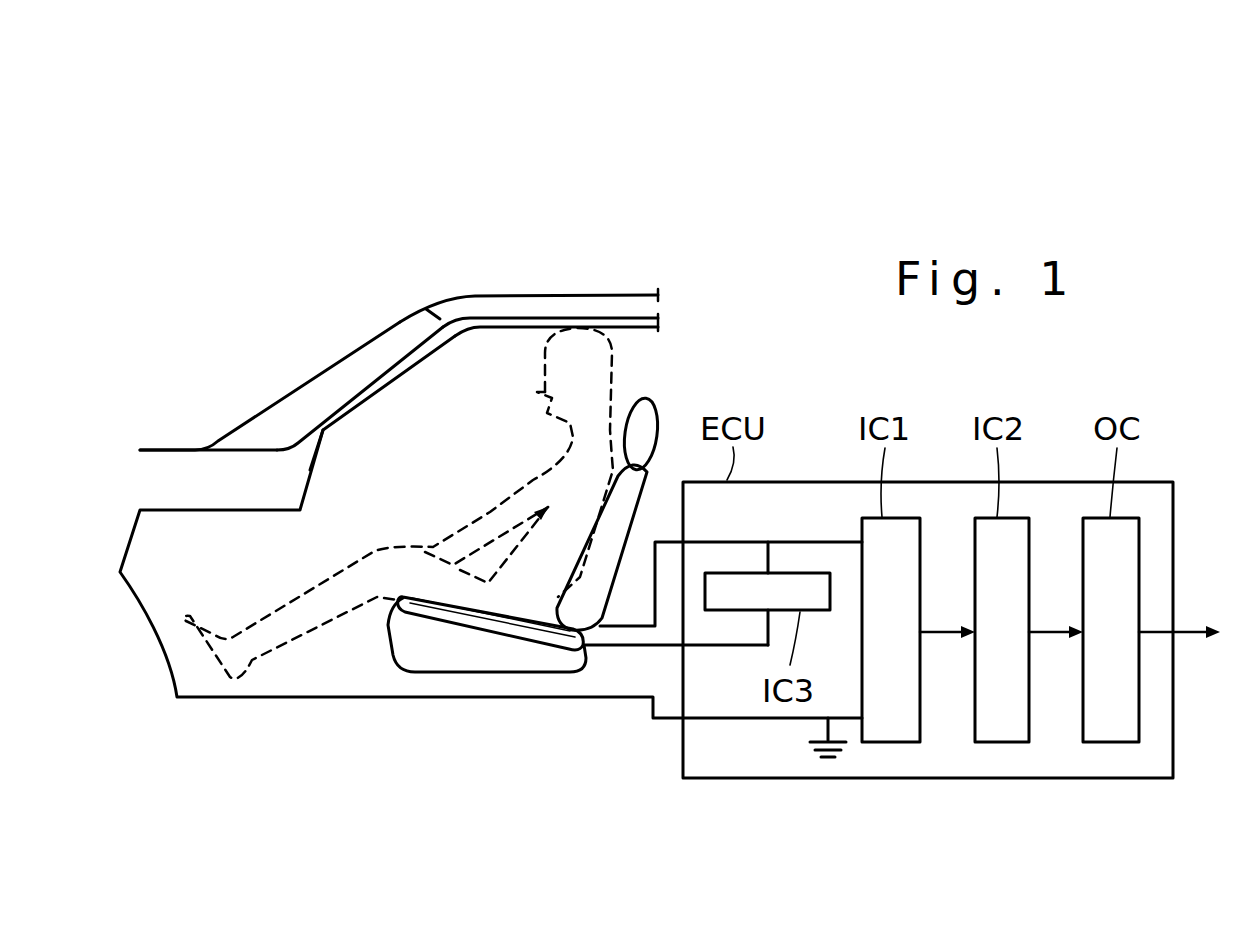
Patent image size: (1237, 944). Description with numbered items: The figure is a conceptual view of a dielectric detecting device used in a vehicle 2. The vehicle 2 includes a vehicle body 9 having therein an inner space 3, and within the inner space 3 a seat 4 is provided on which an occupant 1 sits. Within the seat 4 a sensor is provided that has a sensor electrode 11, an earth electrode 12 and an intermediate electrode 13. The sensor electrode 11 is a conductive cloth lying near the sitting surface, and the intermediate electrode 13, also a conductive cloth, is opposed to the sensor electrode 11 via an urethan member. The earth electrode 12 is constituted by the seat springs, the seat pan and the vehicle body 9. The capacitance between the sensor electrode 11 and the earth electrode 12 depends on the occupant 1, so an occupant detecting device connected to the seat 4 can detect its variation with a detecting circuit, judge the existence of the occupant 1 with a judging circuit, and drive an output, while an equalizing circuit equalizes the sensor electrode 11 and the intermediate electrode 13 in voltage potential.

The occupant 1 is at (620, 371).
The vehicle 2 is at (483, 310).
The inner space 3 is at (428, 448).
The seat 4 is at (512, 590).
The vehicle body 9 is at (491, 614).
The earth electrode 12 is at (292, 700).
The sensor electrode 11 is at (410, 587).
The intermediate electrode 13 is at (466, 622).